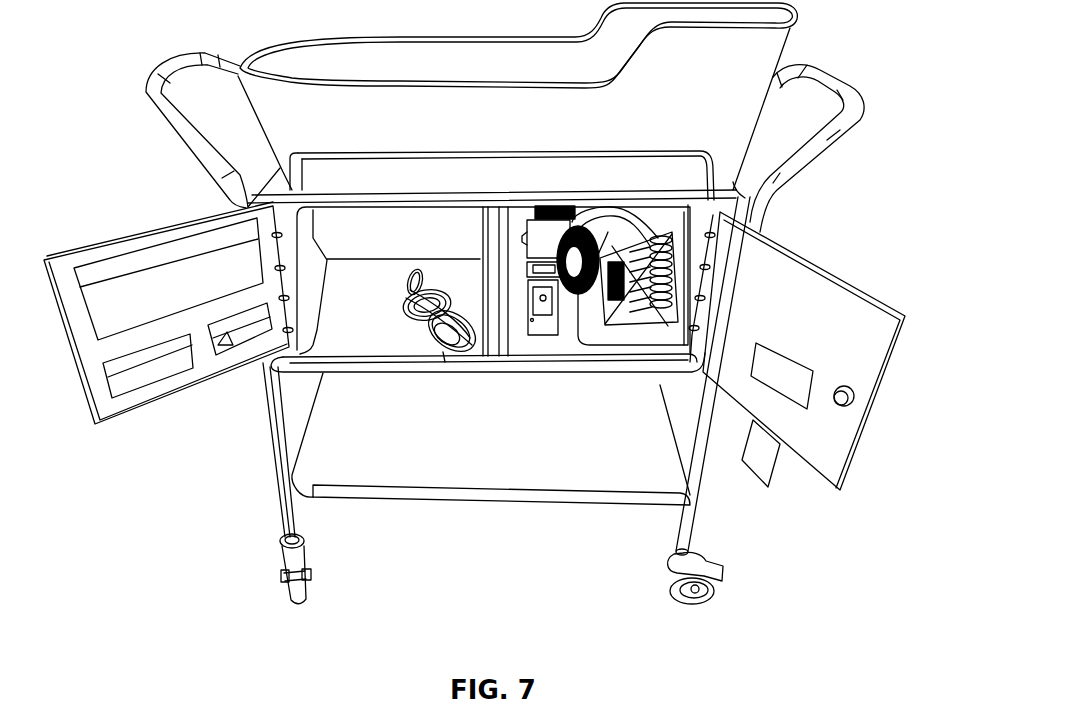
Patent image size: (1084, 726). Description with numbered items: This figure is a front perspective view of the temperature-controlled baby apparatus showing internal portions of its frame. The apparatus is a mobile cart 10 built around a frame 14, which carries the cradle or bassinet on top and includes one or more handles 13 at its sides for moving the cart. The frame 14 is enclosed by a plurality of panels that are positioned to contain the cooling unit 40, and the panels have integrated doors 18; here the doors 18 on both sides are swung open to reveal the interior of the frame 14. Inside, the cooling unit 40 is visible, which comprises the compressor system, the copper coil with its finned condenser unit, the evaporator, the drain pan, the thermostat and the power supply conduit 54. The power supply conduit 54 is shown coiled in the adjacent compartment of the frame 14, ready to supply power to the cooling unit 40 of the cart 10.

The cart 10 is at (502, 353).
The handle 13 is at (122, 79).
The frame 14 is at (706, 507).
The door 18 is at (200, 370).
The cooling unit 40 is at (626, 340).
The power supply conduit 54 is at (449, 342).